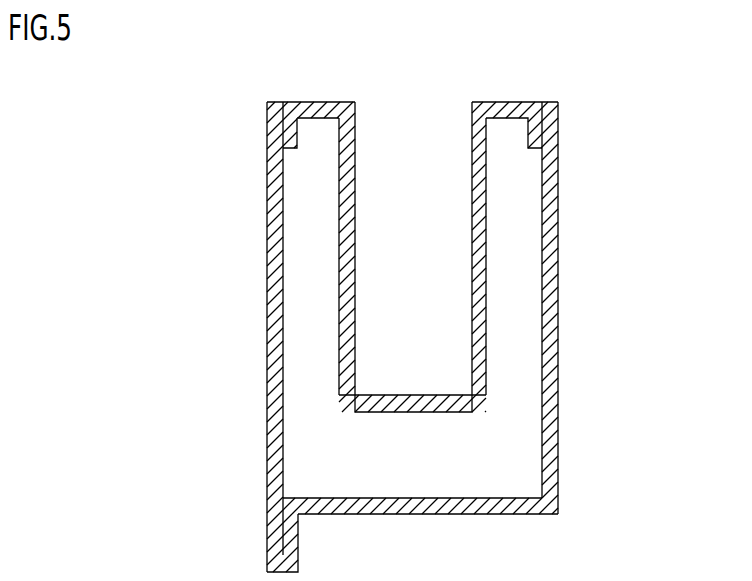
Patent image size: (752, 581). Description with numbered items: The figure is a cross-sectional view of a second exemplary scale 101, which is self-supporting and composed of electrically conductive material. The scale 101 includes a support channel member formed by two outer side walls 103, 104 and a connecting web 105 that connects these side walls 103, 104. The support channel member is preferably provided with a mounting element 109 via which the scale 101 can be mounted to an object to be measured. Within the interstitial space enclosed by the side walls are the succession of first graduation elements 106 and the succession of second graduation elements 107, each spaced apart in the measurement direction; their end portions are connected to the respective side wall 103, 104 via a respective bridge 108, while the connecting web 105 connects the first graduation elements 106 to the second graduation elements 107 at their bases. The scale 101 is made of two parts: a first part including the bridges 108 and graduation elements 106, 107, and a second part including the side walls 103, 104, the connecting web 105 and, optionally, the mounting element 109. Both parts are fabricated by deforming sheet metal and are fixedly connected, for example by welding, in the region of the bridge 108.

The scale 101 is at (640, 370).
The outer side wall 103 is at (273, 250).
The outer side wall 104 is at (552, 307).
The connecting web 105 is at (443, 507).
The first graduation elements 106 is at (350, 176).
The second graduation elements 107 is at (477, 222).
The bridge 108 is at (313, 103).
The mounting element 109 is at (270, 529).